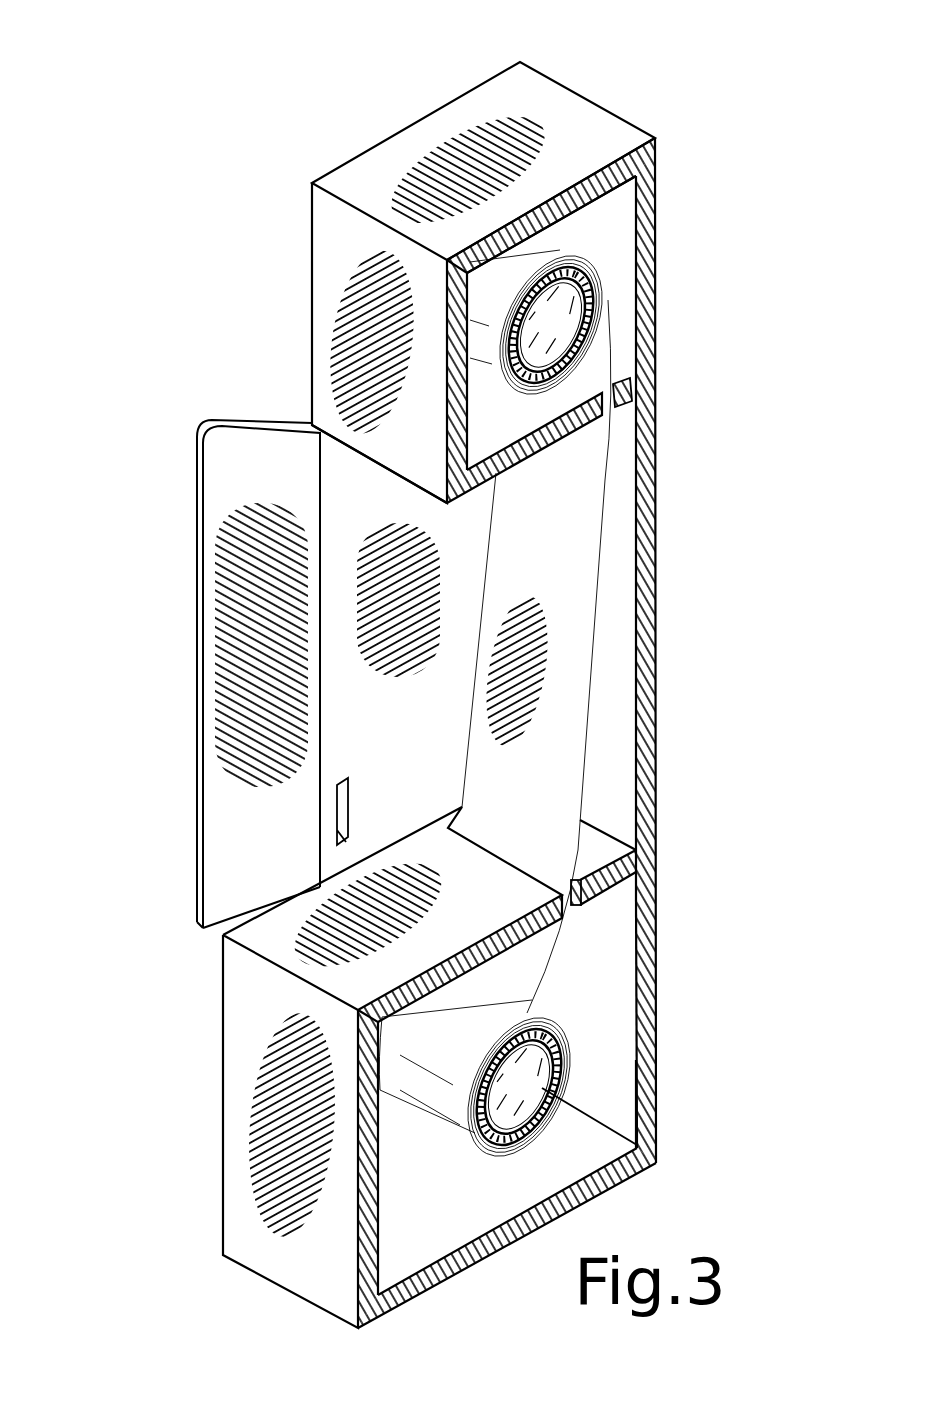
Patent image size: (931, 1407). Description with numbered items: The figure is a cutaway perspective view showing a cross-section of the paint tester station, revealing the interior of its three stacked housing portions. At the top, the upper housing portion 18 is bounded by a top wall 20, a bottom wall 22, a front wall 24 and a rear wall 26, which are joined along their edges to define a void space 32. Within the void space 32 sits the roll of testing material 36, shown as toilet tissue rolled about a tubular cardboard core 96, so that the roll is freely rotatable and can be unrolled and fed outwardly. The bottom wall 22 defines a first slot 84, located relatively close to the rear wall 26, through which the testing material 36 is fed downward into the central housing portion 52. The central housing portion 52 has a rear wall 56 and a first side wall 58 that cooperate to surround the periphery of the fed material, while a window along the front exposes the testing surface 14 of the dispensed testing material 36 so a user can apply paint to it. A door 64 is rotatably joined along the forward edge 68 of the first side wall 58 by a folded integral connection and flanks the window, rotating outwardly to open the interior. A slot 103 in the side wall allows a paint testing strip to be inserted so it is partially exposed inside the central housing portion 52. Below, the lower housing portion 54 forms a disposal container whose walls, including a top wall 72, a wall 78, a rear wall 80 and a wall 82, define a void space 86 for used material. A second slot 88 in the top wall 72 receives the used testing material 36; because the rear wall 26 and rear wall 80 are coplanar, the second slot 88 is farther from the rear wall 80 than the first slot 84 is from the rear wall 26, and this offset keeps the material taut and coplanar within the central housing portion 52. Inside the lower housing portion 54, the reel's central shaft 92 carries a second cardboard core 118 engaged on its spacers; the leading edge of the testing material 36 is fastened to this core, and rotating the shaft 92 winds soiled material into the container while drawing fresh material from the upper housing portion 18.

The testing surface 14 is at (568, 614).
The upper housing portion 18 is at (422, 115).
The top wall 20 is at (527, 92).
The bottom wall 22 is at (557, 463).
The front wall 24 is at (332, 233).
The rear wall 26 is at (655, 175).
The void space 32 is at (612, 247).
The testing material 36 is at (602, 508).
The central housing portion 52 is at (650, 545).
The lower housing portion 54 is at (222, 1220).
The rear wall 56 is at (618, 705).
The first side wall 58 is at (343, 475).
The door 64 is at (197, 612).
The forward edge 68 is at (323, 493).
The top wall 72 is at (272, 937).
The wall 78 is at (248, 1080).
The rear wall 80 is at (623, 1098).
The wall 82 is at (567, 1173).
The first slot 84 is at (615, 392).
The void space 86 is at (597, 1062).
The second slot 88 is at (578, 890).
The central shaft 92 is at (573, 1143).
The cardboard core 96 is at (600, 297).
The slot 103 is at (340, 807).
The second cardboard core 118 is at (560, 1037).